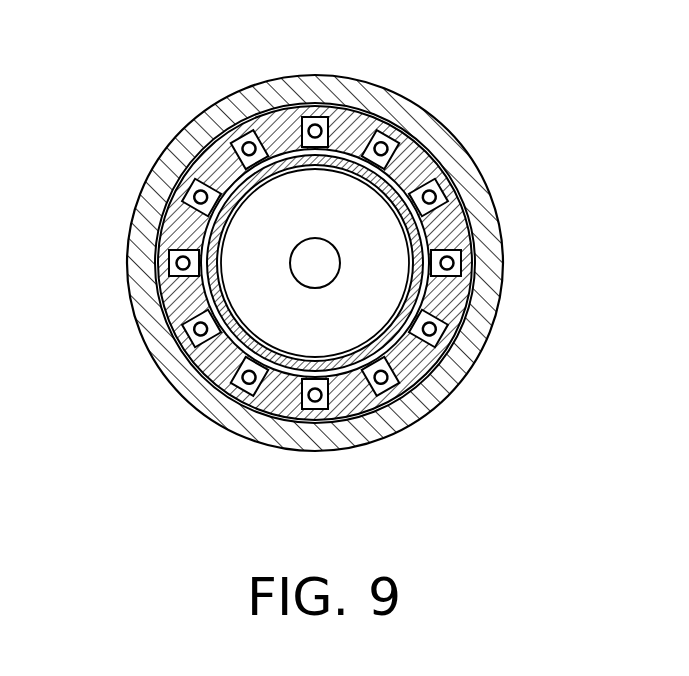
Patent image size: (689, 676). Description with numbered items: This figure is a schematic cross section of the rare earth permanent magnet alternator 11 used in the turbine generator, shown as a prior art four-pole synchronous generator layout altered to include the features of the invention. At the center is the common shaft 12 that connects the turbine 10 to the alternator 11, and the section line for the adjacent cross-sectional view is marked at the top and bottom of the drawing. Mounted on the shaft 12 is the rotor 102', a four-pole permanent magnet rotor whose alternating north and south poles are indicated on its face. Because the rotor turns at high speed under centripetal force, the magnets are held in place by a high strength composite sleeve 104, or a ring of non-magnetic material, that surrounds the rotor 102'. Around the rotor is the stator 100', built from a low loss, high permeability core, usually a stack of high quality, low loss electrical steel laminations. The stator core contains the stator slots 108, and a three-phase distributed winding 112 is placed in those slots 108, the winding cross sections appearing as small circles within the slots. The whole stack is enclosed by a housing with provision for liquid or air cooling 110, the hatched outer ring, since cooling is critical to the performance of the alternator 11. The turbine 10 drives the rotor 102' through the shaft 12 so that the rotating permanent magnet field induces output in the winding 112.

The turbine 10 is at (318, 63).
The rare earth permanent magnet alternator 11 is at (301, 259).
The shaft 12 is at (328, 270).
The stator 100' is at (251, 263).
The rotor 102' is at (252, 290).
The composite sleeve 104 is at (410, 180).
The stator slots 108 is at (450, 343).
The housing with provision for liquid or air cooling 110 is at (427, 112).
The three-phase distributed winding 112 is at (200, 195).